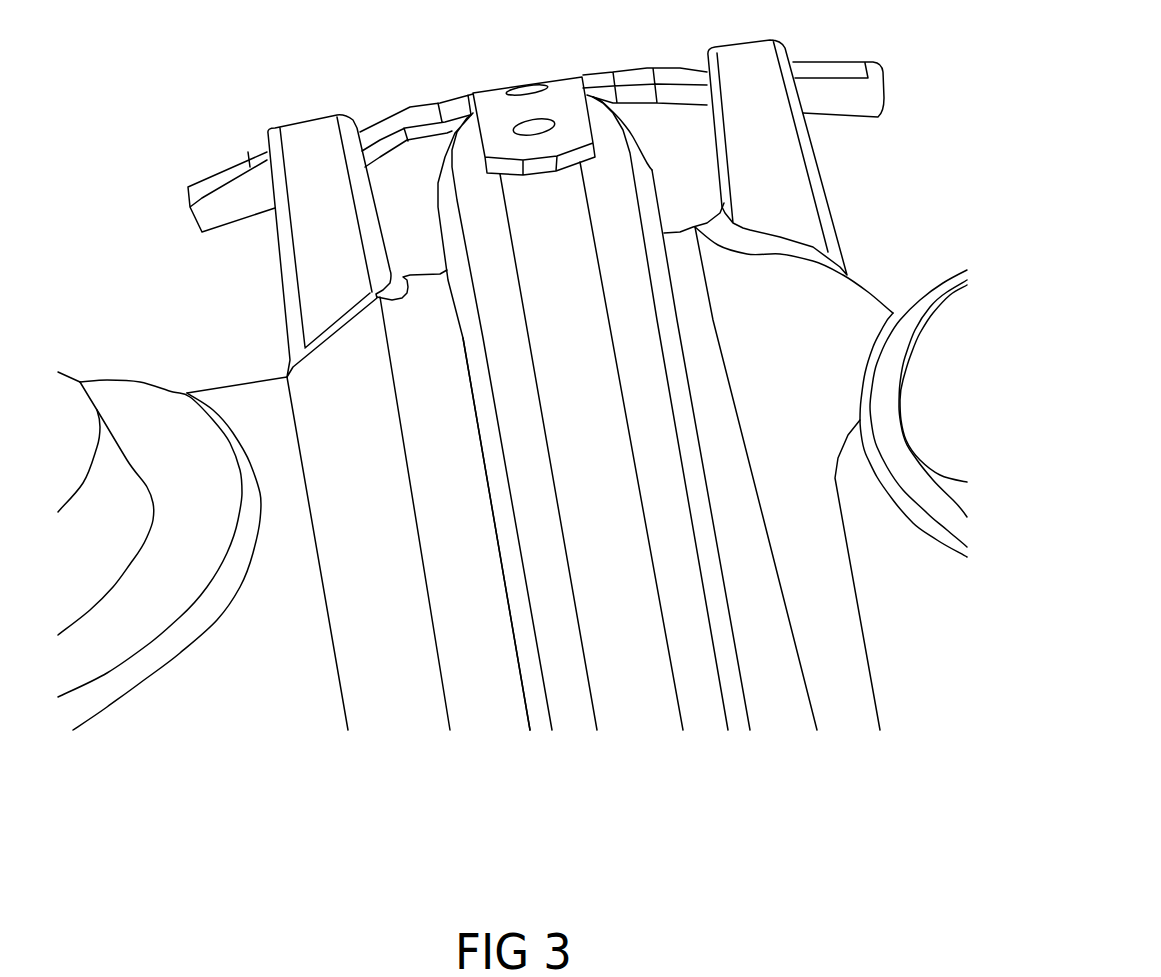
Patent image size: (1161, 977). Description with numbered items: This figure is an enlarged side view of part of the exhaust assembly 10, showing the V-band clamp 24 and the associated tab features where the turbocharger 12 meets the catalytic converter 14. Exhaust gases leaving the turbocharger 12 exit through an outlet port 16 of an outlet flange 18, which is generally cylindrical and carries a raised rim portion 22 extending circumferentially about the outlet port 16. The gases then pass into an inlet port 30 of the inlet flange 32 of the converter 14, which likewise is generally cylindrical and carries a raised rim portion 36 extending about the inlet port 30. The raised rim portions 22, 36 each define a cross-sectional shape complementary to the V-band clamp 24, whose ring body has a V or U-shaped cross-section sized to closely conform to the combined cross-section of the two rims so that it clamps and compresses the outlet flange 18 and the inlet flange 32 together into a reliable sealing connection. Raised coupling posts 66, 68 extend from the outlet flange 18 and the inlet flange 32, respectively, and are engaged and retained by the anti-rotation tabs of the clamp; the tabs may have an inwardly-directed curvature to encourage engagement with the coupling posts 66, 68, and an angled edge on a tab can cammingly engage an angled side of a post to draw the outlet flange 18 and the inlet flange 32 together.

The exhaust assembly 10 is at (728, 800).
The turbocharger 12 is at (787, 717).
The catalytic converter 14 is at (247, 403).
The outlet port 16 is at (872, 308).
The outlet flange 18 is at (807, 287).
The raised rim portion 22 is at (658, 198).
The V-band clamp 24 is at (615, 732).
The inlet port 30 is at (393, 683).
The inlet flange 32 is at (502, 700).
The raised rim portion 36 is at (447, 242).
The raised coupling post 66 is at (747, 67).
The raised coupling post 68 is at (303, 257).